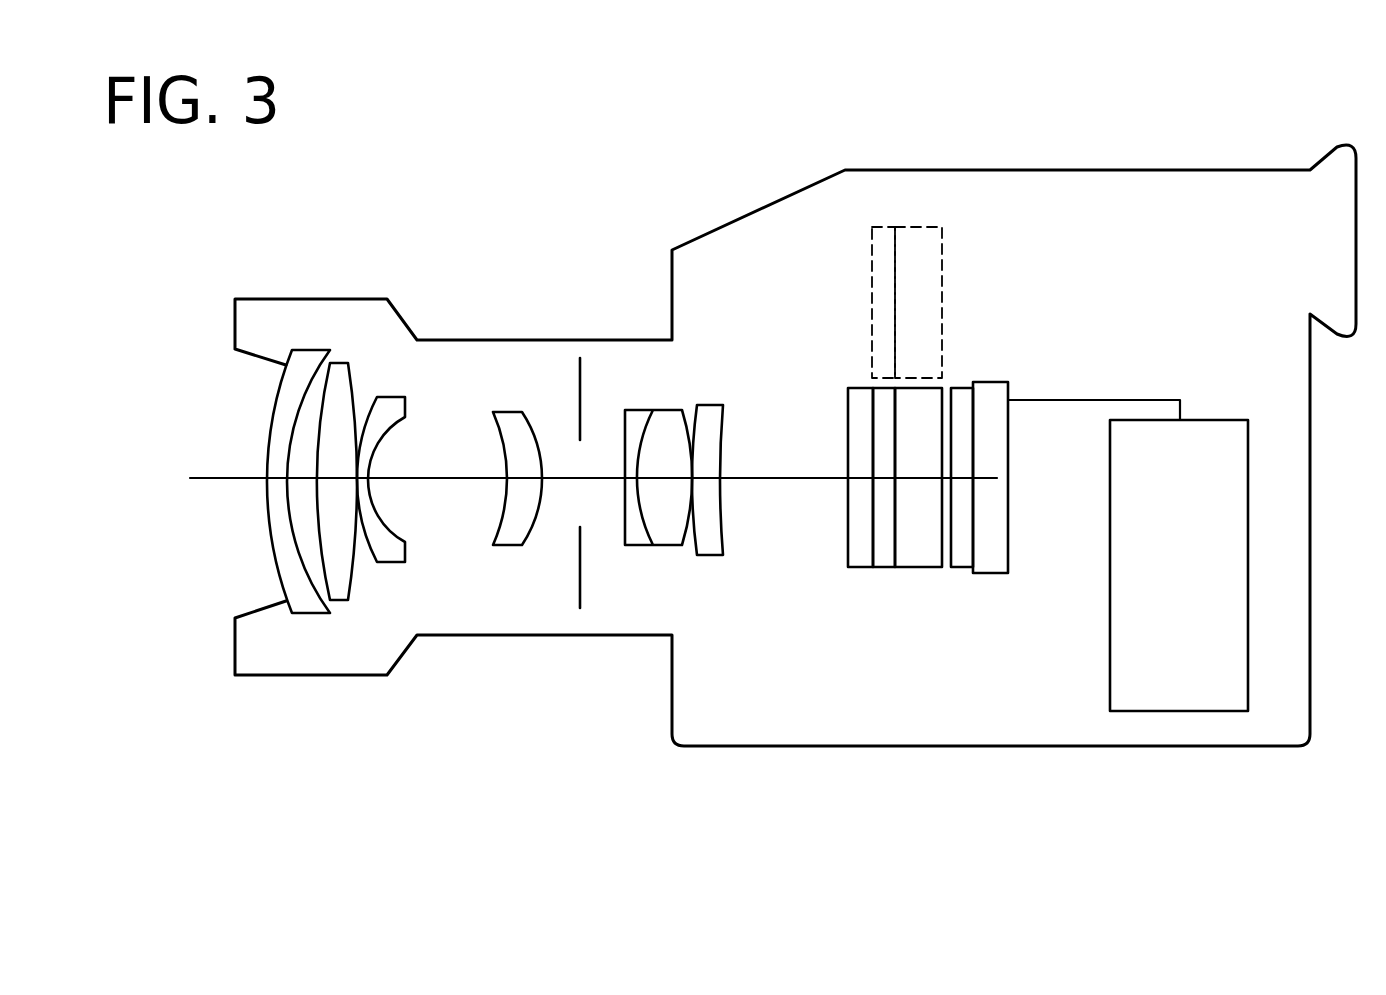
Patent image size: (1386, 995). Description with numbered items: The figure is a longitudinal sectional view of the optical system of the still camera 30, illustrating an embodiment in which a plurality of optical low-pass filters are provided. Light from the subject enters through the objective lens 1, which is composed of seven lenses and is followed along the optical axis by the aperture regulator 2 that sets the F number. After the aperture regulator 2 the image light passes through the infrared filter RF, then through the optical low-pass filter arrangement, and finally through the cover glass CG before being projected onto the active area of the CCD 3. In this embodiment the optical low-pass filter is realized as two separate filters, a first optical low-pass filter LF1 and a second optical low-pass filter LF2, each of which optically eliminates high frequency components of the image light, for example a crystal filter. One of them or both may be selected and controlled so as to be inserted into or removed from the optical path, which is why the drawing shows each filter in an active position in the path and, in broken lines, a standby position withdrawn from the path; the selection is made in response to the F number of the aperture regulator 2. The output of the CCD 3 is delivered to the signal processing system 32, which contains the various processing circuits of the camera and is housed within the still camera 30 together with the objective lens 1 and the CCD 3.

The still camera 30 is at (748, 200).
The objective lens 1 is at (985, 328).
The aperture regulator 2 is at (579, 568).
The CCD 3 is at (998, 575).
The signal processing system 32 is at (1213, 420).
The infrared filter RF is at (862, 568).
The first optical low-pass filter LF1 is at (885, 568).
The second optical low-pass filter LF2 is at (922, 568).
The cover glass CG is at (962, 568).